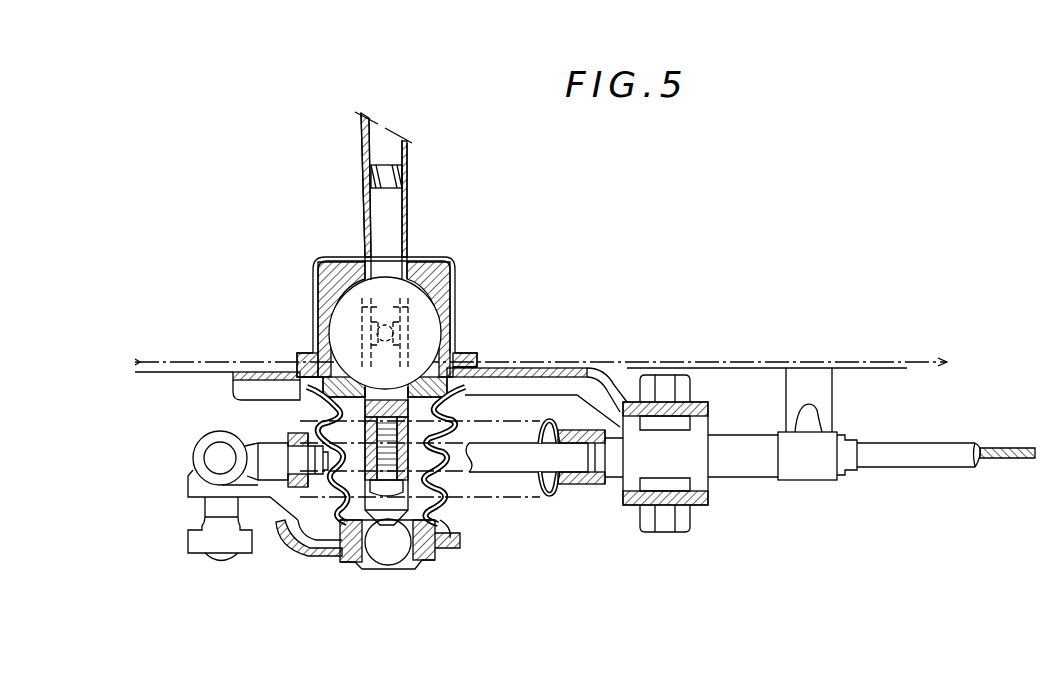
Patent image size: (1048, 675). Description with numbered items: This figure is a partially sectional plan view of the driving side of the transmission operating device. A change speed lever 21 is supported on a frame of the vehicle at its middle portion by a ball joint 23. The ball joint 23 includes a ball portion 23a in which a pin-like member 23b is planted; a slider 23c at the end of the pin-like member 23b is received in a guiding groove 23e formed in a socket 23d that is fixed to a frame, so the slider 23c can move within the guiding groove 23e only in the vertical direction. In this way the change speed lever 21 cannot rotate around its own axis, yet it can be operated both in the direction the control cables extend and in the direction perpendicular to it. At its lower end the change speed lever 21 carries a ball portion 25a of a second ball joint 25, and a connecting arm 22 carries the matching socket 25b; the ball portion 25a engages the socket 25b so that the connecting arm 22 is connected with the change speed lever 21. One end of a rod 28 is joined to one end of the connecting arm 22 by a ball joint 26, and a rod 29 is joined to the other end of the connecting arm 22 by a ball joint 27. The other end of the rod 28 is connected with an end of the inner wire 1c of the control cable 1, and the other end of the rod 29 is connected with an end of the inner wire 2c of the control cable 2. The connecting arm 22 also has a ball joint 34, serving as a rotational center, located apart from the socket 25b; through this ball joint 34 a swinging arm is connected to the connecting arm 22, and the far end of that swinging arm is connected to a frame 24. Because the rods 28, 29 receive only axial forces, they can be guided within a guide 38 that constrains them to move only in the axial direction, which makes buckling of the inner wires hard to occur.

The control cable 1 is at (844, 464).
The control cable 2 is at (907, 476).
The inner wire 1c is at (1003, 504).
The inner wire 2c is at (1005, 473).
The change speed lever 21 is at (405, 215).
The connecting arm 22 is at (302, 547).
The ball joint 23 is at (467, 268).
The ball portion 23a is at (428, 318).
The pin-like member 23b is at (377, 334).
The slider 23c is at (366, 316).
The socket 23d is at (465, 355).
The guiding groove 23e is at (370, 300).
The frame 24 is at (737, 360).
The ball joint 25 is at (458, 560).
The ball portion 25a is at (388, 557).
The socket 25b is at (447, 535).
The ball joint 26 is at (187, 473).
The ball joint 27 is at (215, 458).
The rod 28 is at (237, 439).
The rod 29 is at (305, 436).
The ball joint 34 is at (212, 542).
The guide 38 is at (527, 463).